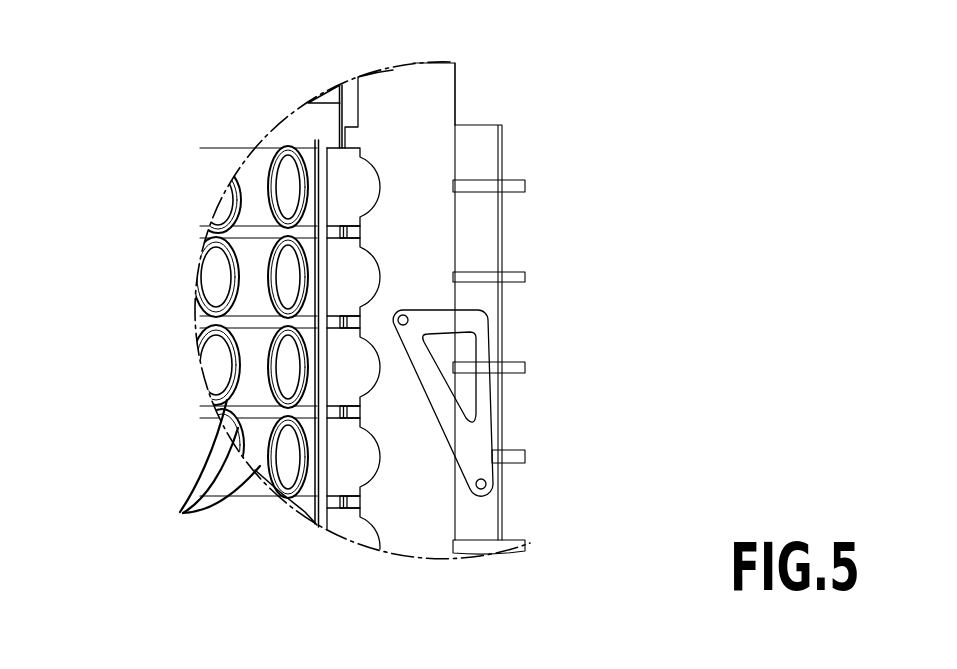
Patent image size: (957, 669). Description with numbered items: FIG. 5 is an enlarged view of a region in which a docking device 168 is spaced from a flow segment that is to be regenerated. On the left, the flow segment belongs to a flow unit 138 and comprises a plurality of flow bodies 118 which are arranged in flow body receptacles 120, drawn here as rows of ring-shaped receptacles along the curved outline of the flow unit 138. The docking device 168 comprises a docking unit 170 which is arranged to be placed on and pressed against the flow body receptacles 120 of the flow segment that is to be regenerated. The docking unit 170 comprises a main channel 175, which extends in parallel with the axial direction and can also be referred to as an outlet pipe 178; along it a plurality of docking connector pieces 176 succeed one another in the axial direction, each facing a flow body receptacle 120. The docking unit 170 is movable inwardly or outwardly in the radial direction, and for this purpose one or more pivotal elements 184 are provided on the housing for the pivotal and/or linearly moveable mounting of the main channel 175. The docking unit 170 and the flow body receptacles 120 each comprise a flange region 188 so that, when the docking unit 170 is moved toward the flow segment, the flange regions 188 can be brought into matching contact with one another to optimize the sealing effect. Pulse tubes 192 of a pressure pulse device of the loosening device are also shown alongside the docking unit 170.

The flow bodies 118 is at (288, 176).
The flow body receptacles 120 is at (181, 512).
The flow unit 138 is at (190, 378).
The docking device 168 is at (410, 506).
The docking unit 170 is at (422, 133).
The main channel 175 is at (413, 95).
The docking connector pieces 176 is at (353, 200).
The outlet pipe 178 is at (423, 157).
The pivotal elements 184 is at (480, 440).
The flange region 188 is at (318, 142).
The pulse tubes 192 is at (515, 277).